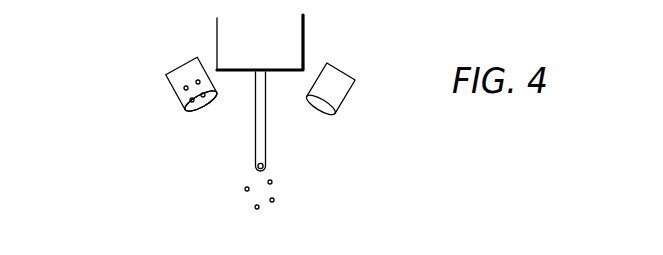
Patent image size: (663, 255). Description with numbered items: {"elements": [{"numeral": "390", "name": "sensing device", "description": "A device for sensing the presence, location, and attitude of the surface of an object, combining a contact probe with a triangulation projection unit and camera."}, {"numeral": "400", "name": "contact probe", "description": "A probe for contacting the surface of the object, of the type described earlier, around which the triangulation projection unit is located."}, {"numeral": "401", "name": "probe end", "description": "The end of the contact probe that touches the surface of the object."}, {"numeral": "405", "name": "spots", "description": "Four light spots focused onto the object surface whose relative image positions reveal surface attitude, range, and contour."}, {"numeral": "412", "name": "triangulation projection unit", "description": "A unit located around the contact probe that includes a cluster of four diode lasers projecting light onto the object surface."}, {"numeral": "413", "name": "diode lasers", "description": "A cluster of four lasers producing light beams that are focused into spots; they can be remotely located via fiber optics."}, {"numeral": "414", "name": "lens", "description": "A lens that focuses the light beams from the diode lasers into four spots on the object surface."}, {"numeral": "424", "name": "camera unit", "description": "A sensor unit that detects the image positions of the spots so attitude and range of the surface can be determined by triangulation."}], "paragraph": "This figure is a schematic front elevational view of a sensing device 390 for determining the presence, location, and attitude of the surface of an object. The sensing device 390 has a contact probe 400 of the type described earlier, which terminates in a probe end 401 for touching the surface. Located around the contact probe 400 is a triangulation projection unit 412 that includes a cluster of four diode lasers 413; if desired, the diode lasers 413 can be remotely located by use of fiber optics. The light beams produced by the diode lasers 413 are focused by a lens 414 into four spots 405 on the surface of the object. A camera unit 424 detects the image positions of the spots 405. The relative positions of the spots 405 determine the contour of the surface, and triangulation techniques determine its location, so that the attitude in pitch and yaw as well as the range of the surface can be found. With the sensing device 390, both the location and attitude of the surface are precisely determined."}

The spray assembly 390 is at (108, 75).
The housing 400 is at (305, 37).
The delivery tube 401 is at (266, 128).
The droplets 405 is at (275, 210).
The left cup nozzle 412 is at (216, 88).
The holes in cup 413 is at (186, 86).
The cup bottom opening 414 is at (180, 115).
The right cup nozzle 424 is at (338, 102).